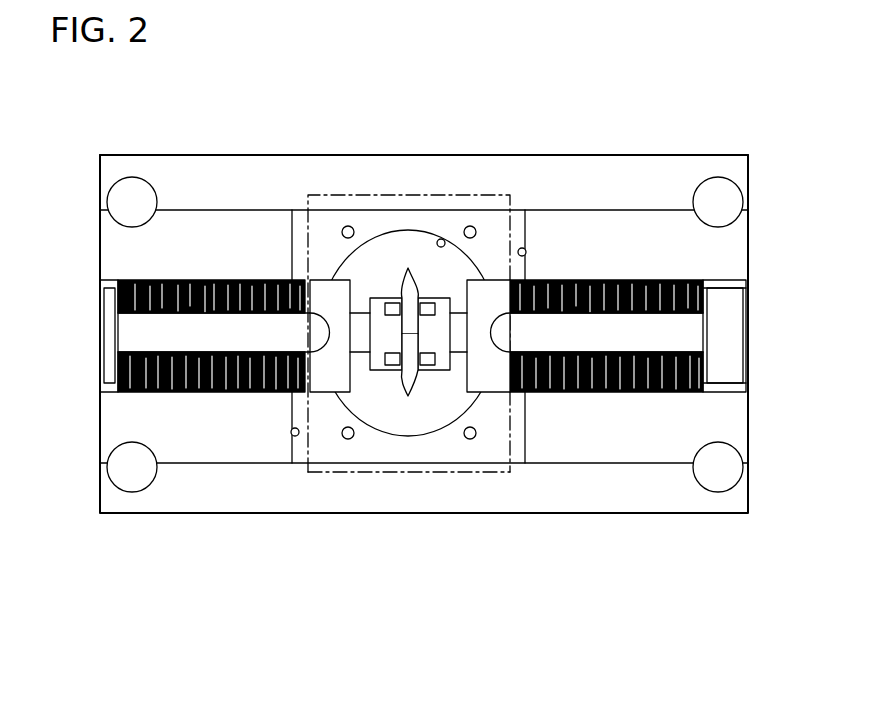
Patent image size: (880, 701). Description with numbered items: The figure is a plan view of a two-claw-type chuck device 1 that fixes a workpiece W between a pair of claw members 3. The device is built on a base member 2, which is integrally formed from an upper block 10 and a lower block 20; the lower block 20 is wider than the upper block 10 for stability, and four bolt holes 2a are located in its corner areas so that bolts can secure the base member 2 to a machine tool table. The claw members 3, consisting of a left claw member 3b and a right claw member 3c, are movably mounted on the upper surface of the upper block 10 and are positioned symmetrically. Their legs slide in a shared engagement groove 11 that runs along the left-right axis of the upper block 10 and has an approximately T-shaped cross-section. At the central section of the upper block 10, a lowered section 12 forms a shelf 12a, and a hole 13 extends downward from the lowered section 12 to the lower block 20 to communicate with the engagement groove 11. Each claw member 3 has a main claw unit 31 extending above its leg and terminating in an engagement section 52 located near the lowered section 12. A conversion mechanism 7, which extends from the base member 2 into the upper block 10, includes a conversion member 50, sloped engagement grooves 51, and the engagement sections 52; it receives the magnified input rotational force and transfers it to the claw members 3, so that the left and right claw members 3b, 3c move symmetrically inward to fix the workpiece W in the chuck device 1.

The chuck device 1 is at (485, 100).
The base member 2 is at (236, 153).
The bolt holes 2a is at (722, 180).
The claw members 3 is at (423, 404).
The left claw member 3b is at (225, 398).
The right claw member 3c is at (604, 396).
The conversion mechanism 7 is at (455, 393).
The upper block 10 is at (323, 195).
The engagement groove 11 is at (738, 328).
The lowered section 12 is at (506, 225).
The shelf 12a is at (526, 252).
The hole 13 is at (444, 238).
The lower block 20 is at (265, 155).
The main claw unit 31 is at (197, 280).
The conversion member 50 is at (427, 430).
The sloped engagement grooves 51 is at (408, 393).
The engagement sections 52 is at (412, 284).
The workpiece W is at (375, 472).